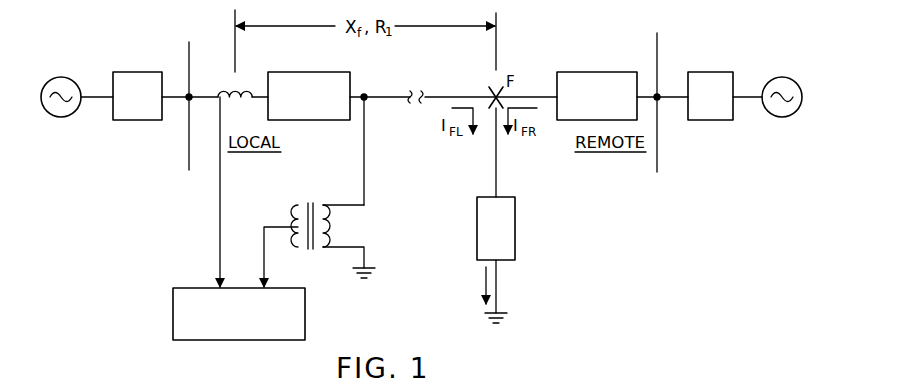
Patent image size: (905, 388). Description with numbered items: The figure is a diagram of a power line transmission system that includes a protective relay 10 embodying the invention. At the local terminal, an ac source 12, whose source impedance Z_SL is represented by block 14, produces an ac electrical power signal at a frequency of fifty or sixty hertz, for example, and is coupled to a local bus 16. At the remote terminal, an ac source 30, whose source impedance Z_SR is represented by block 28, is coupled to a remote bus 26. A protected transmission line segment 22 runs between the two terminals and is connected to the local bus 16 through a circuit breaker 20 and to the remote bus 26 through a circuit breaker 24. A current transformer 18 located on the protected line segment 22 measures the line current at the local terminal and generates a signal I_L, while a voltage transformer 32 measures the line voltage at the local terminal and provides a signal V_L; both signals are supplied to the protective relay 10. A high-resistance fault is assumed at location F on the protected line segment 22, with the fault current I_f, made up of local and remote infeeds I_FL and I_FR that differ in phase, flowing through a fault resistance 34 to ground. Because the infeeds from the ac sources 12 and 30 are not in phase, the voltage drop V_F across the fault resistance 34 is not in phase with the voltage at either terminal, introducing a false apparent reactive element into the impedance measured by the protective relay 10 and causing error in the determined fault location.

The protective relay 10 is at (173, 300).
The ac source 12 is at (75, 77).
The source impedance block 14 is at (126, 72).
The local bus 16 is at (189, 50).
The current transformer 18 is at (226, 88).
The circuit breaker 20 is at (315, 72).
The protected transmission line segment 22 is at (395, 88).
The circuit breaker 24 is at (600, 72).
The remote bus 26 is at (657, 50).
The source impedance block 28 is at (708, 72).
The ac source 30 is at (775, 77).
The voltage transformer 32 is at (312, 201).
The fault resistance 34 is at (477, 208).